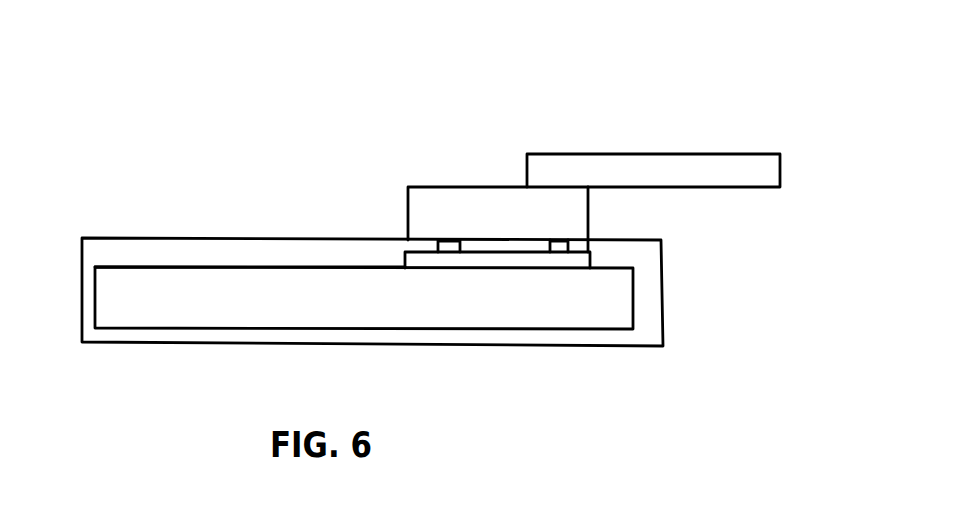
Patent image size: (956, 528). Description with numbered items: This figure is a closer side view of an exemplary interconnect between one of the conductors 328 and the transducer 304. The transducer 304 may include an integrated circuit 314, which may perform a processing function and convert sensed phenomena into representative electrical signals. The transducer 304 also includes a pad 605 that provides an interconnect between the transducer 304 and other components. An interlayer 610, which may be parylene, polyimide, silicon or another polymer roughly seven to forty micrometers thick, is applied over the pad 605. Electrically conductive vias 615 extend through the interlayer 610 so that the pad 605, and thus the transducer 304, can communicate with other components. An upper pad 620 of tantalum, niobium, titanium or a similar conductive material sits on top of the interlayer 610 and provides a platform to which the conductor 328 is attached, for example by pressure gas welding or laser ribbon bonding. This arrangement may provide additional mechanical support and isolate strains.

The transducer 304 is at (143, 288).
The integrated circuit 314 is at (541, 311).
The interlayer 610 is at (237, 253).
The pad 605 is at (585, 265).
The vias 615 is at (450, 245).
The upper pad 620 is at (450, 206).
The conductor 328 is at (628, 158).